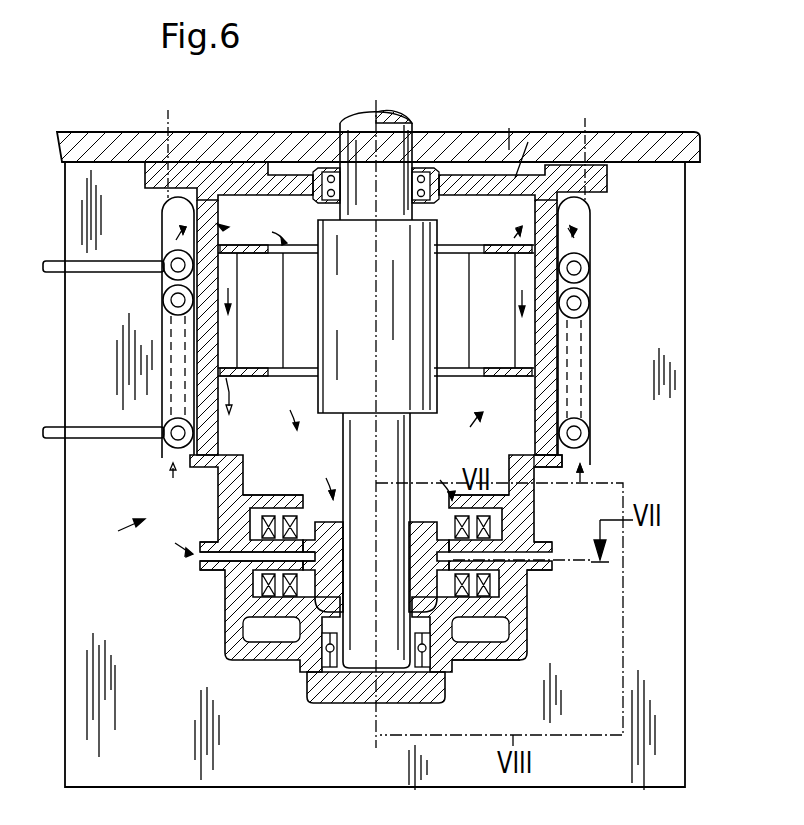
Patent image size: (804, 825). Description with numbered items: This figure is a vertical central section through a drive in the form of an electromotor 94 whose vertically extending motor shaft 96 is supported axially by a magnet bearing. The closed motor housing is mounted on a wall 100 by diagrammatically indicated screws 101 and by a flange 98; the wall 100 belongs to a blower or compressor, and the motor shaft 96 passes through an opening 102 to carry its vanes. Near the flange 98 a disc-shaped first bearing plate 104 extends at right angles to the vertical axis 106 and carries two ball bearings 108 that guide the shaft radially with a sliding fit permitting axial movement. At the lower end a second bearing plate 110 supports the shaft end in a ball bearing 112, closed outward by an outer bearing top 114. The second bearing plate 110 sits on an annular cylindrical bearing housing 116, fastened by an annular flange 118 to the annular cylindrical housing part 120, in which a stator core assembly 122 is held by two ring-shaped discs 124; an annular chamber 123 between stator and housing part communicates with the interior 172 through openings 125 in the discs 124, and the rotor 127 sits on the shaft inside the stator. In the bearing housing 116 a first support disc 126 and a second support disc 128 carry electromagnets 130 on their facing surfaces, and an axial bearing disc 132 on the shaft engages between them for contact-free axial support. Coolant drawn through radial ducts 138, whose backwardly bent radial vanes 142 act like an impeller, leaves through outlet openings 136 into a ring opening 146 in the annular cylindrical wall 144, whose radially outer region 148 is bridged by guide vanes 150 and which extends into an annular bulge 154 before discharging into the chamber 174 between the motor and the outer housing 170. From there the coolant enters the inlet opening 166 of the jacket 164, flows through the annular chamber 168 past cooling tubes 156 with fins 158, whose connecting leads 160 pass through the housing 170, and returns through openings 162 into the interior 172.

The electromotor 94 is at (119, 533).
The motor shaft 96 is at (370, 478).
The flange 98 is at (600, 177).
The wall 100 is at (100, 130).
The screws 101 is at (584, 120).
The opening 102 is at (513, 135).
The first bearing plate 104 is at (245, 180).
The vertical axis 106 is at (376, 745).
The ball bearings 108 is at (416, 170).
The second bearing plate 110 is at (472, 662).
The ball bearing 112 is at (307, 674).
The outer bearing top 114 is at (312, 683).
The bearing housing 116 is at (228, 628).
The annular flange 118 is at (522, 457).
The housing part 120 is at (547, 393).
The stator core assembly 122 is at (506, 288).
The annular chamber 123 is at (518, 348).
The discs 124 is at (272, 397).
The openings 125 is at (228, 243).
The first support disc 126 is at (262, 615).
The rotor 127 is at (362, 318).
The second support disc 128 is at (265, 495).
The electromagnets 130 is at (263, 593).
The axial bearing disc 132 is at (503, 547).
The outlet openings 136 is at (227, 540).
The radial ducts 138 is at (427, 530).
The radial vanes 142 is at (245, 565).
The annular cylindrical wall 144 is at (527, 640).
The ring opening 146 is at (580, 542).
The radially outer region 148 is at (527, 571).
The guide vanes 150 is at (203, 556).
The annular bulge 154 is at (553, 572).
The cooling tubes 156 is at (588, 293).
The fins 158 is at (588, 310).
The connecting leads 160 is at (83, 427).
The openings 162 is at (547, 222).
The jacket 164 is at (592, 357).
The inlet opening 166 is at (588, 470).
The annular chamber 168 is at (582, 242).
The housing 170 is at (620, 617).
The interior 172 is at (472, 437).
The chamber 174 is at (607, 594).